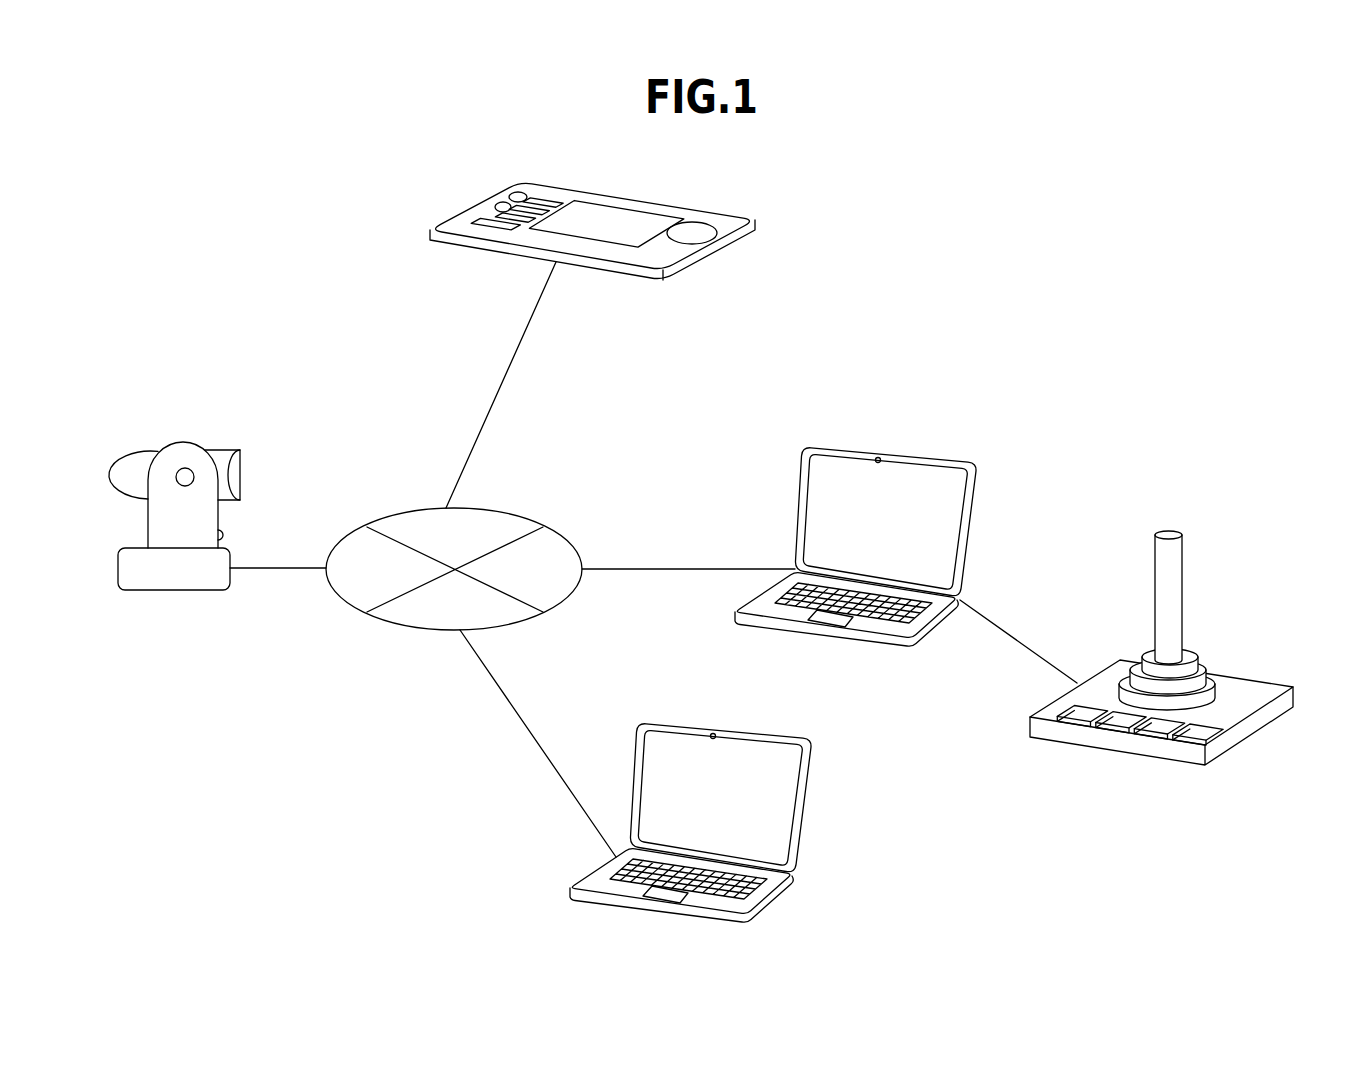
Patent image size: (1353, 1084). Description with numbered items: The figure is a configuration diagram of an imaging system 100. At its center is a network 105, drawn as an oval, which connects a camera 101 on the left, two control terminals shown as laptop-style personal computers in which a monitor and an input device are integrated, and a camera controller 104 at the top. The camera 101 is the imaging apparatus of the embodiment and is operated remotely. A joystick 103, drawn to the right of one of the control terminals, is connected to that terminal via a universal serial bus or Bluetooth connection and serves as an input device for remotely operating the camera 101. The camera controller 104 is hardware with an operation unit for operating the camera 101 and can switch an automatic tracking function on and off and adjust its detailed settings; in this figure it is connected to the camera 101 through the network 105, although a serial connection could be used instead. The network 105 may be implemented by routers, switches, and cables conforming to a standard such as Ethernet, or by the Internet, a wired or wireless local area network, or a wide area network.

The imaging system 100 is at (1030, 278).
The camera 101 is at (150, 448).
The joystick 103 is at (1168, 532).
The camera controller 104 is at (615, 192).
The network 105 is at (508, 508).